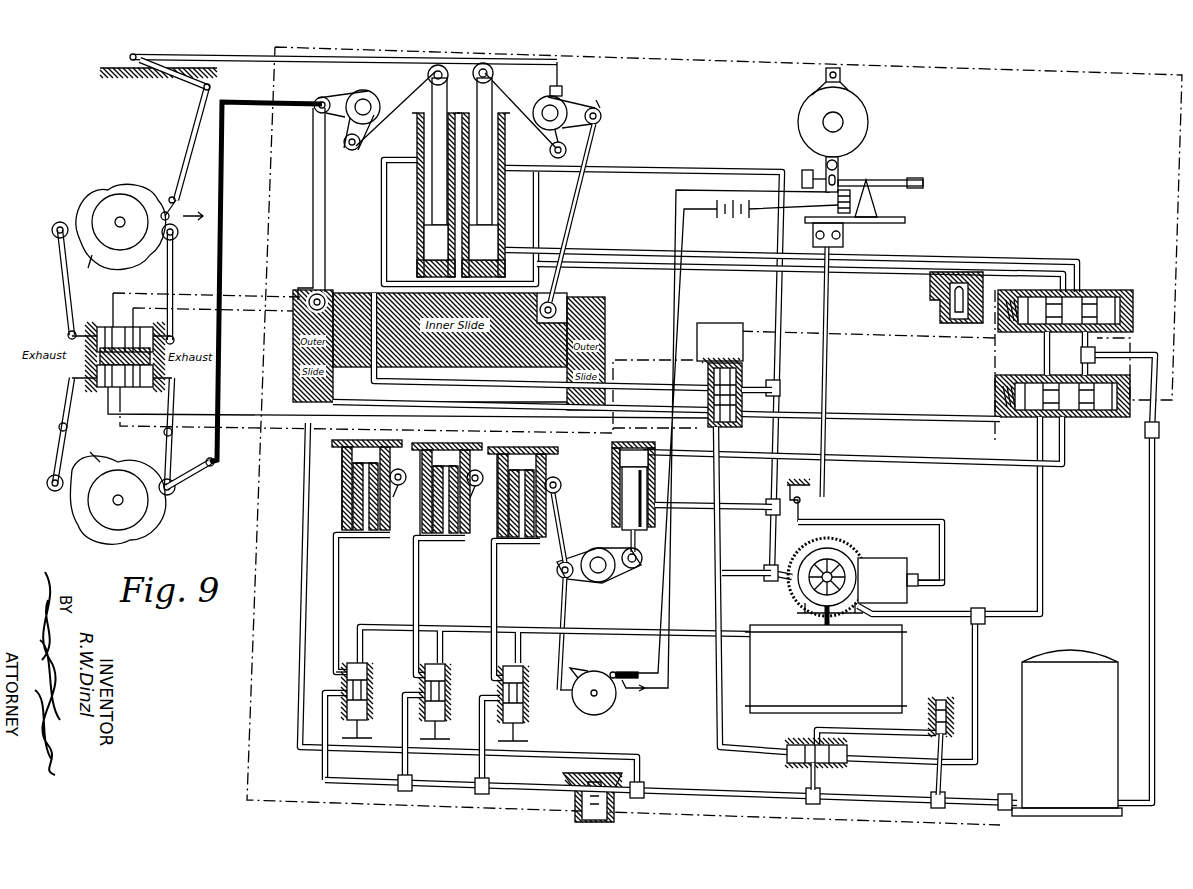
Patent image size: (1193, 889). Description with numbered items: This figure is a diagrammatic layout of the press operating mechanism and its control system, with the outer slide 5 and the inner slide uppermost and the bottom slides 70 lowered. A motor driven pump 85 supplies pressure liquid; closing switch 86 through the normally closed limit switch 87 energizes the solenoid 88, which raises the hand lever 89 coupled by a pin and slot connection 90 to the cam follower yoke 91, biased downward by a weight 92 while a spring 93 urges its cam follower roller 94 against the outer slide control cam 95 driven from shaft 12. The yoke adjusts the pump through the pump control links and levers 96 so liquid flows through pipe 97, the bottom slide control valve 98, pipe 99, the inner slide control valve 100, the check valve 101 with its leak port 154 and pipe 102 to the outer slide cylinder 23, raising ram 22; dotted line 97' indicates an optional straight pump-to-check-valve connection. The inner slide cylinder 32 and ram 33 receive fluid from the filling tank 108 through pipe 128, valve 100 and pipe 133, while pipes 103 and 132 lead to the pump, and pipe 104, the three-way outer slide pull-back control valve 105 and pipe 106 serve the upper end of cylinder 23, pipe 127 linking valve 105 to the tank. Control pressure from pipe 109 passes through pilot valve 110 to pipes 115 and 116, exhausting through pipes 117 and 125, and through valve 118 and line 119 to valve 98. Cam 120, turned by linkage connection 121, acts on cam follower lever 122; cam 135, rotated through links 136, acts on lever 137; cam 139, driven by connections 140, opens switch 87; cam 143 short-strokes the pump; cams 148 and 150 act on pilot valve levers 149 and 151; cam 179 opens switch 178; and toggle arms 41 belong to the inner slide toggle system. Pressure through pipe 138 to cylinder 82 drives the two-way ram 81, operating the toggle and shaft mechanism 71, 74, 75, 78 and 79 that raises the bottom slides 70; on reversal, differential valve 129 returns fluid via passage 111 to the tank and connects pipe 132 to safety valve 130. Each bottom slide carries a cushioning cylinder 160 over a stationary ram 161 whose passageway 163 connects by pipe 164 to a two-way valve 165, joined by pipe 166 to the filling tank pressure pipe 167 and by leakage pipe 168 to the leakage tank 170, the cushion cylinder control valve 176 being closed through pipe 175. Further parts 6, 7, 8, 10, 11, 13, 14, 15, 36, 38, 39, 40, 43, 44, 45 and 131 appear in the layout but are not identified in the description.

The outer slide 5 is at (293, 388).
The inner slide 6 is at (360, 367).
The press frame 7 is at (313, 205).
The outer slide pivot 8 is at (310, 302).
The pulley 10 is at (317, 100).
The link 11 is at (345, 98).
The outer slide toggle shaft 12 is at (366, 98).
The link 13 is at (400, 100).
The pulley 14 is at (352, 150).
The link 15 is at (366, 136).
The outer slide ram 22 is at (424, 236).
The outer slide cylinder 23 is at (417, 201).
The inner slide hydraulic cylinder 32 is at (505, 197).
The inner slide ram 33 is at (498, 235).
The link 36 is at (526, 100).
The pulley 38 is at (550, 150).
The link 39 is at (550, 140).
The pulley 40 is at (566, 108).
The toggle arm 41 is at (596, 100).
The pulley 43 is at (601, 116).
The connecting rod 44 is at (592, 146).
The inner slide pivot 45 is at (558, 304).
The bottom action table 70 is at (477, 473).
The toggle arm 71 is at (560, 516).
The link 74 is at (578, 578).
The common shaft 75 is at (557, 569).
The toggle member 78 is at (636, 568).
The toggle member 79 is at (636, 544).
The two-way ram 81 is at (620, 468).
The bottom slide cylinder 82 is at (622, 490).
The pump 85 is at (836, 540).
The switch 86 is at (636, 692).
The limit switch 87 is at (614, 671).
The solenoid 88 is at (867, 201).
The hand lever 89 is at (910, 179).
The pin and slot connection 90 is at (836, 177).
The cam follower yoke 91 is at (826, 160).
The weight 92 is at (802, 176).
The spring 93 is at (845, 236).
The cam follower roller 94 is at (840, 163).
The outer slide control cam 95 is at (860, 110).
The pump control links and levers 96 is at (828, 371).
The pipe 97 is at (941, 589).
The dotted line connection 97' is at (1011, 434).
The bottom slide control valve 98 is at (979, 396).
The pipe 99 is at (1045, 356).
The inner slide control valve 100 is at (1108, 293).
The check valve 101 is at (931, 317).
The pipe 102 is at (885, 290).
The pipe 103 is at (620, 172).
The pipe 104 is at (384, 215).
The outer slide pull-back control valve 105 is at (704, 376).
The pipe 106 is at (754, 388).
The filling tank 108 is at (1022, 690).
The pipe 109 is at (625, 757).
The pilot valve 110 is at (395, 402).
The passage 111 is at (822, 776).
The pipe 115 is at (118, 430).
The pipe 116 is at (125, 402).
The exhaust pipe 117 is at (160, 352).
The pilot valve 118 is at (113, 320).
The line 119 is at (702, 62).
The cam 120 is at (97, 462).
The linkage connection 121 is at (262, 102).
The cam follower lever 122 is at (170, 450).
The exhaust pipe 125 is at (90, 350).
The pipe 127 is at (890, 412).
The pipe 128 is at (1150, 461).
The differential valve 129 is at (778, 722).
The safety valve 130 is at (942, 698).
The pipe 131 is at (944, 778).
The pipe 132 is at (784, 580).
The pipe 133 is at (916, 262).
The cam 135 is at (88, 190).
The links 136 is at (235, 52).
The pilot valve lever 137 is at (175, 256).
The pipe 138 is at (948, 460).
The cam 139 is at (602, 670).
The operative connections 140 is at (562, 613).
The outer slide operated cam 143 is at (820, 84).
The cam 148 is at (90, 270).
The pilot valve lever 149 is at (65, 262).
The cam 150 is at (80, 513).
The pilot valve lever 151 is at (60, 452).
The leak port 154 is at (956, 297).
The cushioning cylinder 160 is at (342, 496).
The stationary ram 161 is at (352, 507).
The passageway 163 is at (355, 522).
The pipe 164 is at (338, 568).
The two-way valve 165 is at (375, 664).
The pipe 166 is at (325, 730).
The filling tank pressure pipe 167 is at (525, 782).
The leakage pipe 168 is at (347, 652).
The leakage tank 170 is at (750, 678).
The pipe 175 is at (168, 316).
The cushion cylinder control valve 176 is at (190, 150).
The switch 178 is at (197, 208).
The cam 179 is at (160, 200).